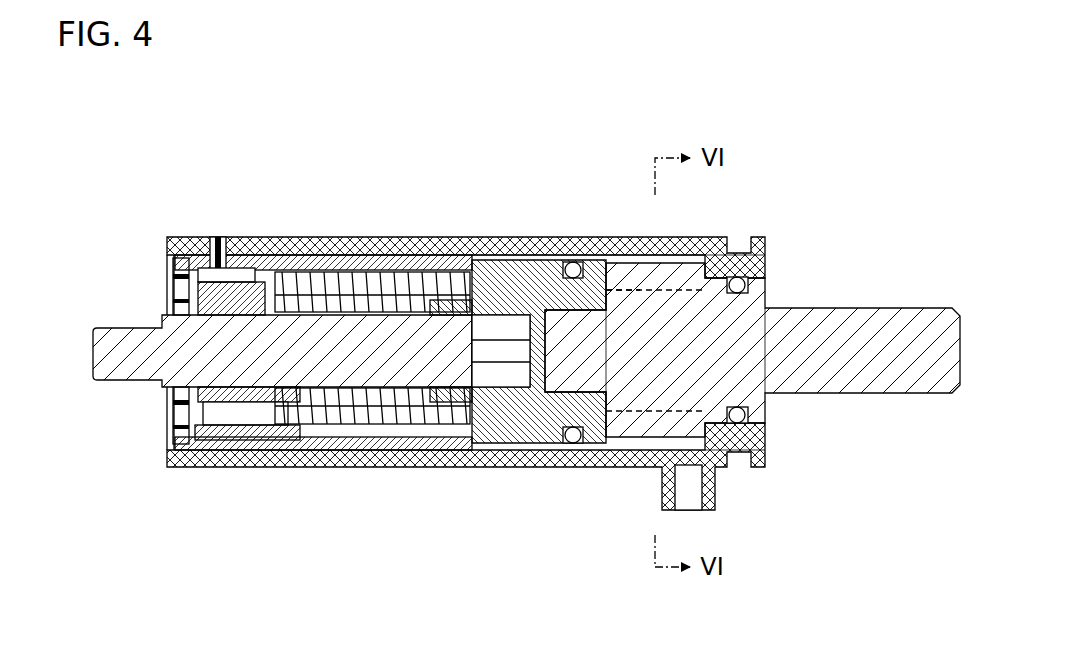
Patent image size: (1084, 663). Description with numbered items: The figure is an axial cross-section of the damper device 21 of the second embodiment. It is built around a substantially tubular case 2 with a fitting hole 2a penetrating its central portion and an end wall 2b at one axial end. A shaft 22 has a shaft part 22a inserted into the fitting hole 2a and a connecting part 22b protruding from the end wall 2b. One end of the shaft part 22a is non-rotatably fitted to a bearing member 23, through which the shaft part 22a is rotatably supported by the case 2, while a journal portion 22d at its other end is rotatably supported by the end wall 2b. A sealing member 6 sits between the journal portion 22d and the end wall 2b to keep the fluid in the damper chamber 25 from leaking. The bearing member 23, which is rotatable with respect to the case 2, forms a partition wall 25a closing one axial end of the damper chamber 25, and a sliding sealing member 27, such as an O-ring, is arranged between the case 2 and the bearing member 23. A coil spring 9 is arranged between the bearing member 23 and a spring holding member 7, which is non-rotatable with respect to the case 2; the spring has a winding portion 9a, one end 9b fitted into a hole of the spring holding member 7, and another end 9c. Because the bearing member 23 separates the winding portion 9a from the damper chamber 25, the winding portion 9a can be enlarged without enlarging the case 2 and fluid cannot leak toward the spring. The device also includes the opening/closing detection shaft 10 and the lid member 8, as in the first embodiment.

The damper device 21 is at (500, 51).
The case 2 is at (447, 230).
The fitting hole 2a is at (403, 237).
The end wall 2b is at (727, 237).
The sealing member 6 is at (738, 430).
The spring holding member 7 is at (302, 237).
The lid member 8 is at (238, 237).
The coil spring 9 is at (362, 353).
The winding portion 9a is at (365, 424).
The one end 9b is at (245, 418).
The other end 9c is at (512, 355).
The opening/closing detection shaft 10 is at (133, 326).
The shaft 22 is at (752, 349).
The shaft part 22a is at (660, 400).
The connecting part 22b is at (897, 378).
The journal portion 22d is at (745, 400).
The bearing member 23 is at (523, 237).
The damper chamber 25 is at (650, 290).
The partition wall 25a is at (616, 237).
The sliding sealing member 27 is at (566, 237).